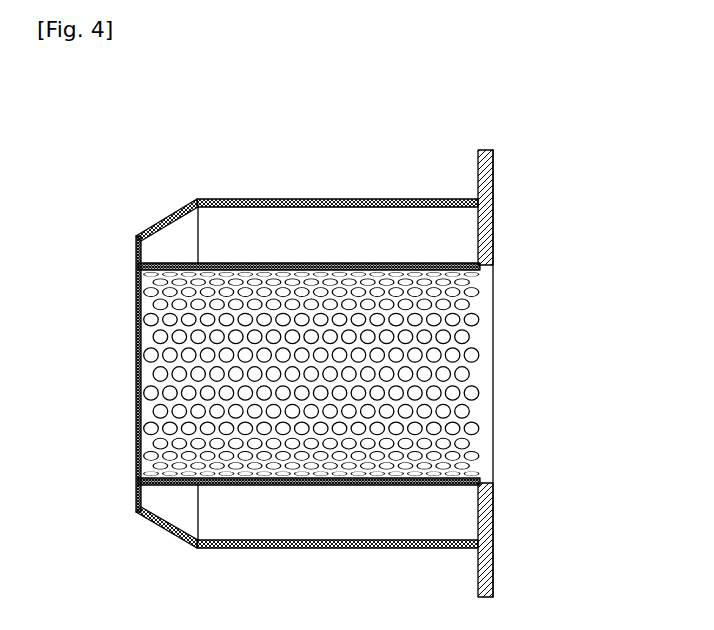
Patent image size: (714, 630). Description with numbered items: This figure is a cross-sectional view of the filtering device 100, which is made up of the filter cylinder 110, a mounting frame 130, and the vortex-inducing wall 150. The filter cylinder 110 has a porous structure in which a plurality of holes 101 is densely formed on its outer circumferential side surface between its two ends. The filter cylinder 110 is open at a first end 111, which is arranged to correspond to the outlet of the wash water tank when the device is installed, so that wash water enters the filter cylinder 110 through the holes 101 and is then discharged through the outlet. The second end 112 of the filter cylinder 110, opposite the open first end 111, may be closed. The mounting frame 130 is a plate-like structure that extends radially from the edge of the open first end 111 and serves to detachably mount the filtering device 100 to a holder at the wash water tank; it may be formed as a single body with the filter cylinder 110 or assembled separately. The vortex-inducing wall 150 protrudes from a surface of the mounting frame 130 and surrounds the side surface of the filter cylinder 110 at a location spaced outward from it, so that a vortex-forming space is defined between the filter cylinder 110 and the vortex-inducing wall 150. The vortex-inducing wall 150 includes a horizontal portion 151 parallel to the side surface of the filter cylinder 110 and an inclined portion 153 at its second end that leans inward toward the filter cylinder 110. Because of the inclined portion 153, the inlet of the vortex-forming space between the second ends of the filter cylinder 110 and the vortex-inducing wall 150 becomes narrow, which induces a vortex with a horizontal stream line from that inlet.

The filtering device 100 is at (128, 138).
The holes 101 is at (472, 313).
The filter cylinder 110 is at (482, 378).
The first end 111 is at (493, 318).
The second end 112 is at (137, 367).
The mounting frame 130 is at (478, 150).
The vortex-inducing wall 150 is at (349, 189).
The horizontal portion 151 is at (258, 198).
The inclined portion 153 is at (176, 212).